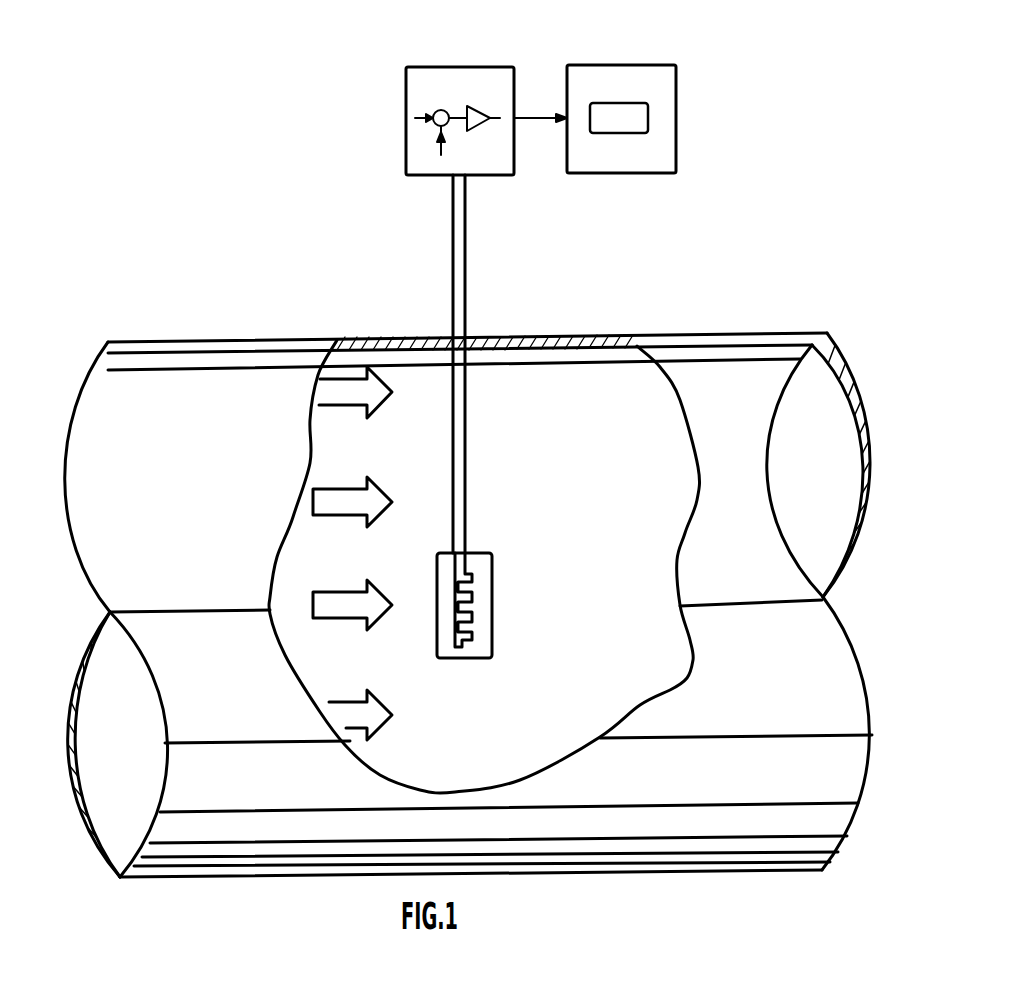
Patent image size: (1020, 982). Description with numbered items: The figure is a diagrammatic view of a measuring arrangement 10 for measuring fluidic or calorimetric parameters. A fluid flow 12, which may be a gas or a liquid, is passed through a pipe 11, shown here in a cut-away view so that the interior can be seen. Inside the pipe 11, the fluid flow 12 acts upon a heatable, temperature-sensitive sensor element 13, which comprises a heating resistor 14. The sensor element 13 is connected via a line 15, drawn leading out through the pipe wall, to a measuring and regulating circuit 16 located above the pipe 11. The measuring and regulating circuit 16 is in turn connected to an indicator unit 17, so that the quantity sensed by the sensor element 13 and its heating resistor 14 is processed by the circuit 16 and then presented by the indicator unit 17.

The measuring arrangement 10 is at (177, 133).
The pipe 11 is at (79, 417).
The fluid flow 12 is at (347, 505).
The sensor element 13 is at (504, 583).
The heating resistor 14 is at (468, 612).
The line 15 is at (466, 398).
The measuring and regulating circuit 16 is at (488, 78).
The indicator unit 17 is at (655, 78).